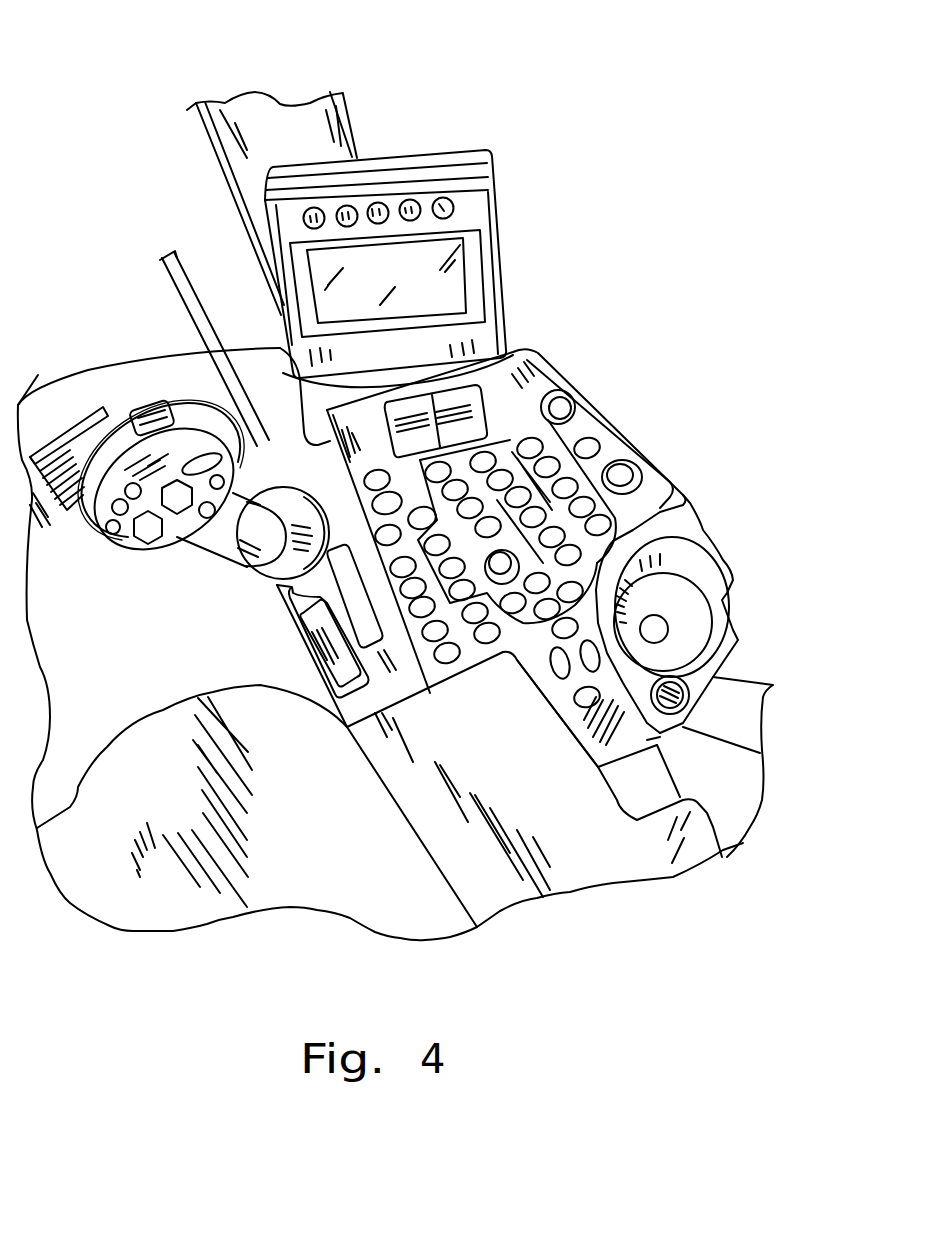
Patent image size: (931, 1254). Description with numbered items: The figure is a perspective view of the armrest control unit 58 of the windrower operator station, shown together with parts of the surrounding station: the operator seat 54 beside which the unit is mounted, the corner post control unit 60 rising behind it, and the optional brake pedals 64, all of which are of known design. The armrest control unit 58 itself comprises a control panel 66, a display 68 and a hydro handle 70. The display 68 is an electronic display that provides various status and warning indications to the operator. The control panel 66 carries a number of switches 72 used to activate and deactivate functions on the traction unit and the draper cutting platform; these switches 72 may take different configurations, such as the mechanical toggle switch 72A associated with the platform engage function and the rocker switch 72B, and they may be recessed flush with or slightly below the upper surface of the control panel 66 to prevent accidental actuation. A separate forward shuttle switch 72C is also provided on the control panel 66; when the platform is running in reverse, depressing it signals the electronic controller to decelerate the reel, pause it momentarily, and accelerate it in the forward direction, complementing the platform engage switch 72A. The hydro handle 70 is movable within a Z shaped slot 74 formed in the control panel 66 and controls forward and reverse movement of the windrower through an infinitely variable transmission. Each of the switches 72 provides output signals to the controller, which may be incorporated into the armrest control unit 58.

The operator seat 54 is at (245, 832).
The armrest control unit 58 is at (675, 477).
The corner post control unit 60 is at (217, 141).
The brake pedals 64 is at (77, 420).
The control panel 66 is at (535, 348).
The display 68 is at (500, 207).
The hydro handle 70 is at (118, 550).
The switches 72 is at (550, 548).
The mechanical toggle switch 72A is at (531, 445).
The rocker switch 72B is at (622, 473).
The forward shuttle switch 72C is at (585, 503).
The Z shaped slot 74 is at (340, 608).